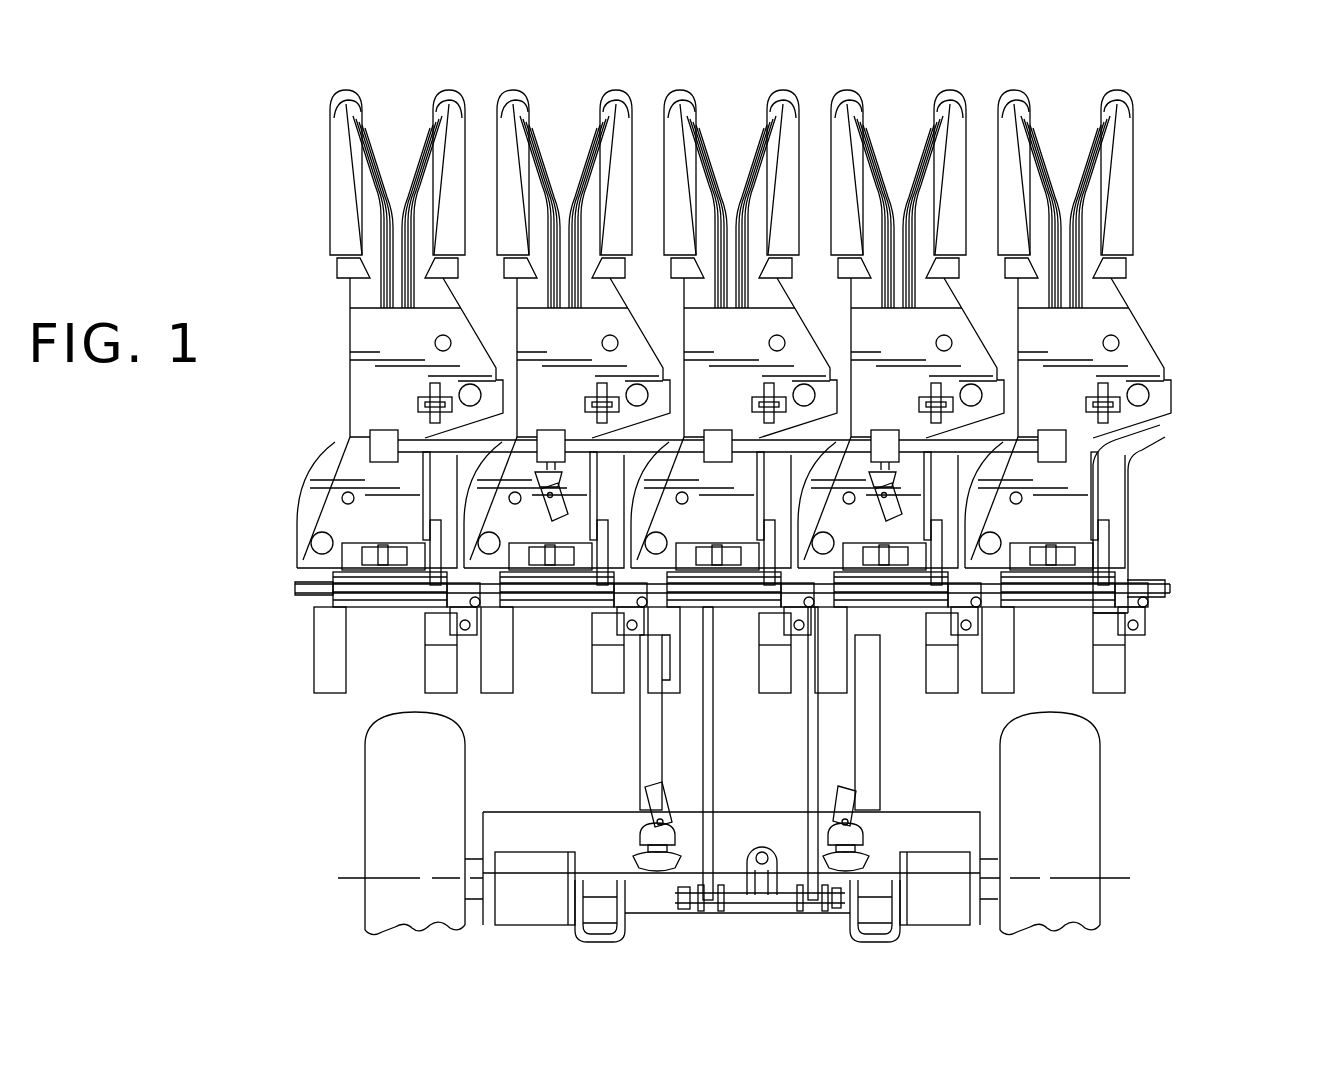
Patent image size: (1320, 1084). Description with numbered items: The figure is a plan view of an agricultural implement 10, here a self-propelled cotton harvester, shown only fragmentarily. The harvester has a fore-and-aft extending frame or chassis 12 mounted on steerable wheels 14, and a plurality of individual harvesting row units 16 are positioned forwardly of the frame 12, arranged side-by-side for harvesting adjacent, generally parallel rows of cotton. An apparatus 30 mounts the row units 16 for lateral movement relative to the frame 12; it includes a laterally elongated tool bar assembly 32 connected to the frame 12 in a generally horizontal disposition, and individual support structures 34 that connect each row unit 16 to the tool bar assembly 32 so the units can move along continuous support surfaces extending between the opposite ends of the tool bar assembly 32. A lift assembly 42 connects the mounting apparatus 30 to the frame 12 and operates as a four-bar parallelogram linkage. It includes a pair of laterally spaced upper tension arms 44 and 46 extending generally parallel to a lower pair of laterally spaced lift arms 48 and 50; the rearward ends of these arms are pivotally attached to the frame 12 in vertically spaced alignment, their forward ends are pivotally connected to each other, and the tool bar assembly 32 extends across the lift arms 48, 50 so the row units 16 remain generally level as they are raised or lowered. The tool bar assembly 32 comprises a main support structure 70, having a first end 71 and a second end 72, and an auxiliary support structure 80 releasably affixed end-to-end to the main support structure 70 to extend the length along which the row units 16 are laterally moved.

The agricultural implement 10 is at (1262, 292).
The frame 12 is at (918, 830).
The steerable wheels 14 is at (383, 797).
The harvesting row units 16 is at (650, 90).
The apparatus 30 is at (302, 602).
The tool bar assembly 32 is at (1160, 582).
The support structures 34 is at (378, 610).
The lift assembly 42 is at (638, 760).
The upper tension arm 44 is at (713, 760).
The upper tension arm 46 is at (812, 737).
The lift arm 48 is at (653, 708).
The lift arm 50 is at (872, 792).
The main support structure 70 is at (490, 587).
The first end 71 is at (420, 590).
The second end 72 is at (1174, 590).
The auxiliary support structure 80 is at (320, 602).